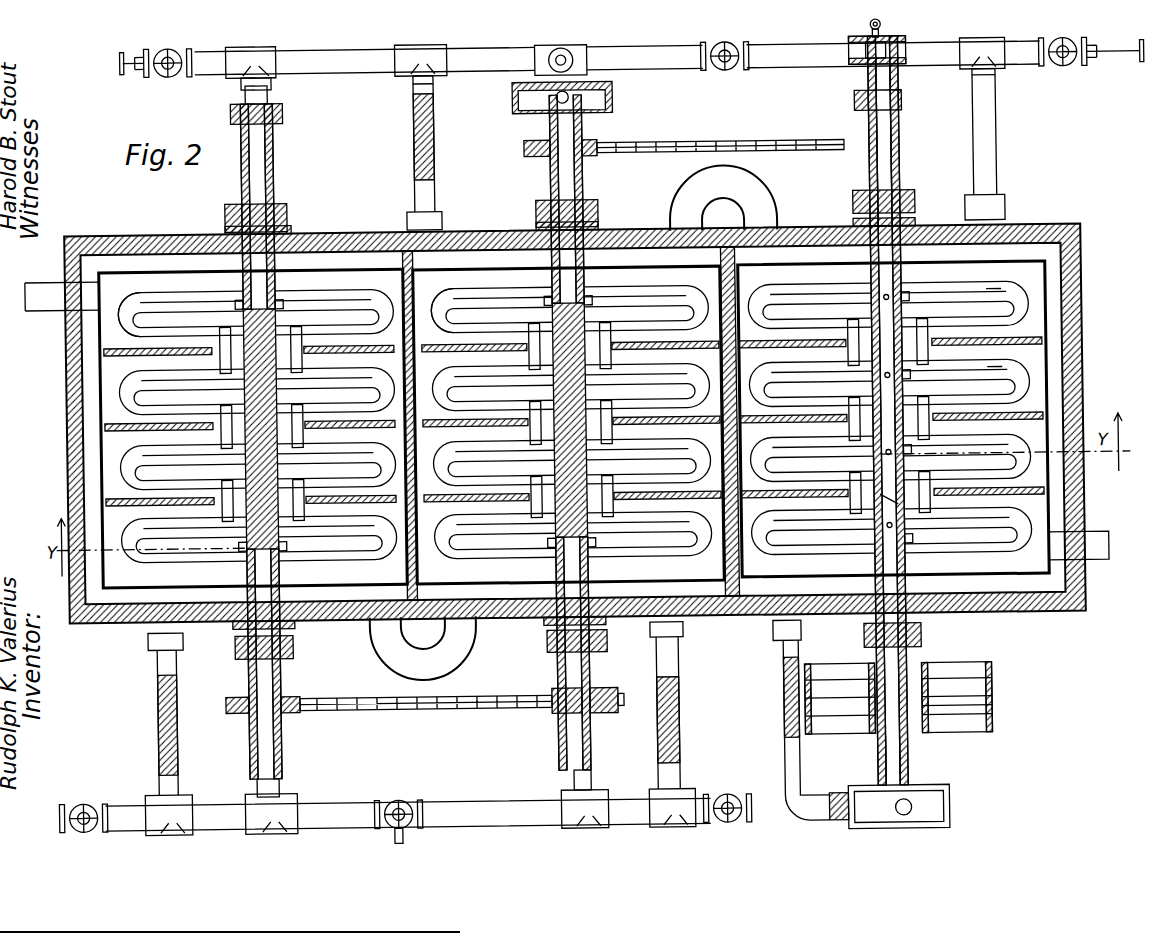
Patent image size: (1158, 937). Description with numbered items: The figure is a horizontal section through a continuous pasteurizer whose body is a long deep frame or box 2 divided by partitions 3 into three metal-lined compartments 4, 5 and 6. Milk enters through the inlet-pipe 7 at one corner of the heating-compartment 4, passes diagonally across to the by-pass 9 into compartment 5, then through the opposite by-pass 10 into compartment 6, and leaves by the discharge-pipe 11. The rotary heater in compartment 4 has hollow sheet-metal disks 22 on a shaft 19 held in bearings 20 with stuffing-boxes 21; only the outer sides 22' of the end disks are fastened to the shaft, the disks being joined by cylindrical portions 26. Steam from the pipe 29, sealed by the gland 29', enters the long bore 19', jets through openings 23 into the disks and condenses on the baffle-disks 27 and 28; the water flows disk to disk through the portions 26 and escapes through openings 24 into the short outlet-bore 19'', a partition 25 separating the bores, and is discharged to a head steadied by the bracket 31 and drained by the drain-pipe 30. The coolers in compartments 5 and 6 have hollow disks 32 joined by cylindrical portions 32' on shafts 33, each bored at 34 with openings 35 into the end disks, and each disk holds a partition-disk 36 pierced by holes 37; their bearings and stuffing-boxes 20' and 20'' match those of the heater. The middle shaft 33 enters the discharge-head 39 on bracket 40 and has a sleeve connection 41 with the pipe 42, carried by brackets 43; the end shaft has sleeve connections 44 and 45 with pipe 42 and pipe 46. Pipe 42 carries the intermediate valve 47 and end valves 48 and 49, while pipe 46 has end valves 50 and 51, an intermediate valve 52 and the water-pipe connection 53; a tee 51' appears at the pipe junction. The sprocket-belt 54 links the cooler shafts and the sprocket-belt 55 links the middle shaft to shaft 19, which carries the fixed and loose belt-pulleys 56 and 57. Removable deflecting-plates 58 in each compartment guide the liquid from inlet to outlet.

The frame or box 2 is at (67, 450).
The partition 3 is at (409, 250).
The heating-compartment 4 is at (894, 419).
The compartment 5 is at (530, 572).
The compartment 6 is at (176, 582).
The inlet-pipe 7 is at (1097, 566).
The by-pass 9 is at (752, 190).
The by-pass 10 is at (385, 668).
The discharge-pipe 11 is at (33, 333).
The shaft 19 is at (883, 410).
The bore 19' is at (918, 140).
The outlet-bore 19'' is at (941, 760).
The bearing 20 is at (909, 203).
The bearing 20' is at (443, 427).
The stuffing-box 20'' is at (415, 391).
The stuffing-box 21 is at (907, 197).
The hollow disk 22 is at (926, 403).
The outer side of disk 22' is at (1026, 404).
The opening 23 is at (912, 304).
The opening 24 is at (912, 534).
The partition 25 is at (897, 504).
The cylindrical portion 26 is at (849, 356).
The baffle-disk 27 is at (972, 290).
The baffle-disk 28 is at (1060, 246).
The steam pipe 29 is at (882, 423).
The stuffing-box or gland 29' is at (861, 107).
The drain-pipe 30 is at (838, 828).
The bracket 31 is at (780, 716).
The hollow disk 32 is at (411, 424).
The cylindrical portion 32' is at (336, 425).
The shaft 33 is at (415, 426).
The bore 34 is at (262, 205).
The opening 35 is at (285, 300).
The partition-disk 36 is at (182, 396).
The hole 37 is at (140, 318).
The discharge-head 39 is at (617, 99).
The bracket 40 is at (440, 132).
The sleeve connection 41 is at (587, 772).
The pipe 42 is at (494, 800).
The bracket 43 is at (175, 746).
The sleeve connection 44 is at (275, 779).
The sleeve connection 45 is at (272, 93).
The pipe 46 is at (357, 72).
The intermediate valve 47 is at (410, 800).
The end valve 48 is at (730, 796).
The end valve 49 is at (94, 802).
The valve 50 is at (1068, 74).
The valve 51 is at (155, 84).
The tee 51' is at (269, 61).
The intermediate valve 52 is at (750, 52).
The water-pipe connection 53 is at (590, 55).
The sprocket-belt 54 is at (462, 710).
The sprocket-belt 55 is at (725, 143).
The fixed belt-pulley 56 is at (988, 680).
The loose belt-pulley 57 is at (988, 718).
The deflecting-plate 58 is at (448, 428).